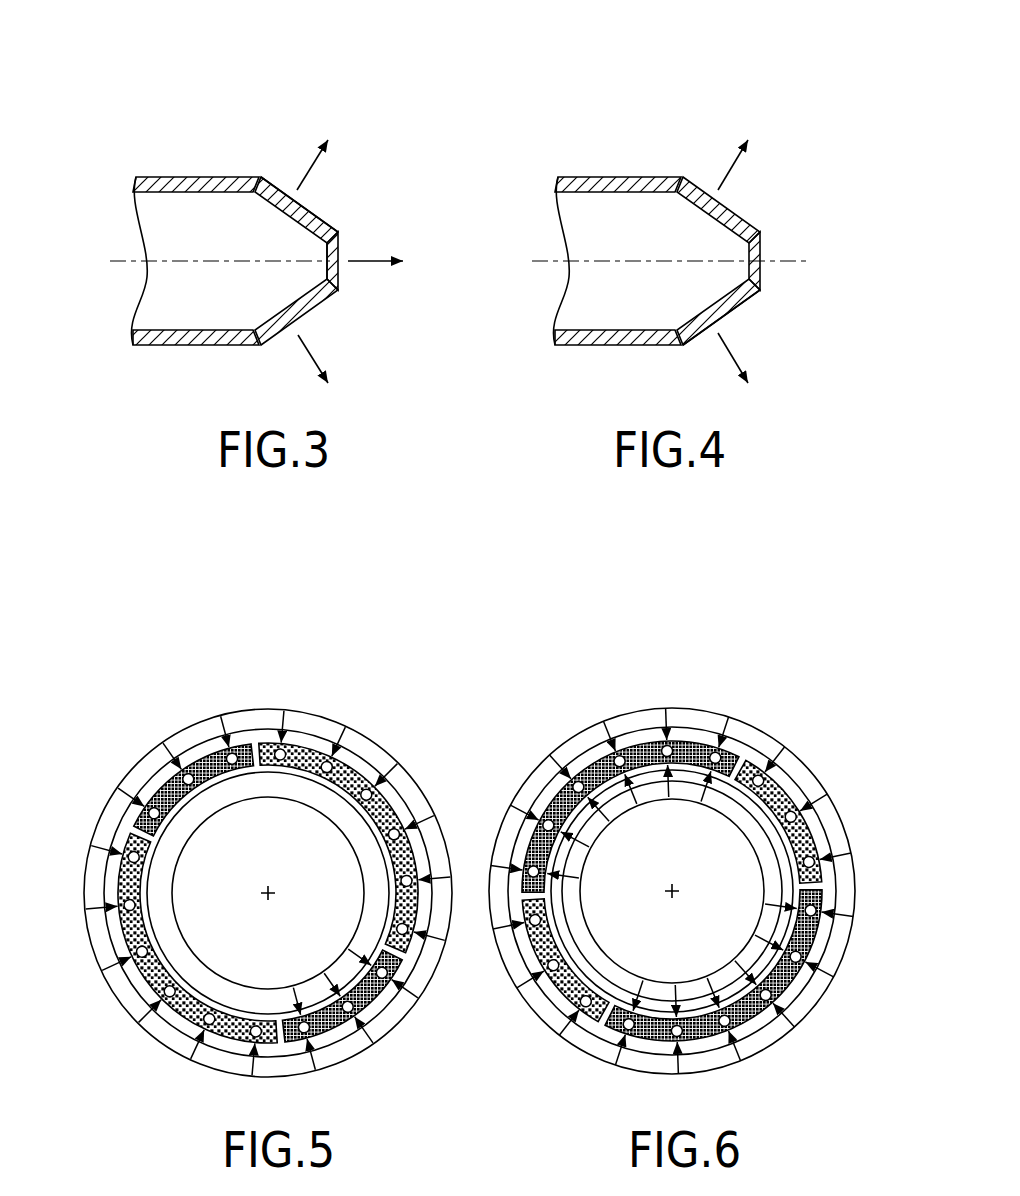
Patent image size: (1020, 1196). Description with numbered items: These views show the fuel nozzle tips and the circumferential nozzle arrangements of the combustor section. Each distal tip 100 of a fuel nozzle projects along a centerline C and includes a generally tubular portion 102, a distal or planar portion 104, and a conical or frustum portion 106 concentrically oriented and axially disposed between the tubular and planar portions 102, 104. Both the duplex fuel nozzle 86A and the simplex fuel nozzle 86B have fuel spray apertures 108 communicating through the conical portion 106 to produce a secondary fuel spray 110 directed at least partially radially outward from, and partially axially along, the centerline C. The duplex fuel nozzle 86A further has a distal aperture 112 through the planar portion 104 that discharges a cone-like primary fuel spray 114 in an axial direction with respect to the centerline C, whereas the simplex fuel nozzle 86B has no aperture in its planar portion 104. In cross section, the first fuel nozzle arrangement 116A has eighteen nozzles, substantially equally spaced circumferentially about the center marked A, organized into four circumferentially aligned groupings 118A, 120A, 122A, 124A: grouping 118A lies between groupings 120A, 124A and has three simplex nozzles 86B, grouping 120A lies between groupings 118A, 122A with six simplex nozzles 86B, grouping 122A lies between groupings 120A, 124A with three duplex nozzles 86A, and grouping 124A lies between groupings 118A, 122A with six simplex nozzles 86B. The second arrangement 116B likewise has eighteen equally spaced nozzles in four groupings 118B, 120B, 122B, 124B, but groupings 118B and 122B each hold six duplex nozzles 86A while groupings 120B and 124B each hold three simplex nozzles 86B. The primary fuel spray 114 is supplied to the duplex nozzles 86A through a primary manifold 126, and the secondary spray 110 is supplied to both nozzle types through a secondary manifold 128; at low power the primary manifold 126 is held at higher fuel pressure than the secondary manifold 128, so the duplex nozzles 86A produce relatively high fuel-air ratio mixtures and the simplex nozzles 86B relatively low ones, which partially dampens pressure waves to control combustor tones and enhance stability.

In FIG. 3, the duplex fuel nozzle 86A is at (272, 83).
In FIG. 5, the duplex fuel nozzle 86A is at (381, 1003).
In FIG. 6, the duplex fuel nozzle 86A is at (670, 758).
In FIG. 4, the simplex fuel nozzle 86B is at (713, 83).
In FIG. 5, the simplex fuel nozzle 86B is at (287, 752).
In FIG. 6, the simplex fuel nozzle 86B is at (803, 805).
In FIG. 3, the distal tip 100 is at (180, 163).
In FIG. 4, the distal tip 100 is at (600, 163).
In FIG. 3, the tubular portion 102 is at (235, 177).
In FIG. 4, the tubular portion 102 is at (587, 346).
In FIG. 3, the planar portion 104 is at (340, 232).
In FIG. 4, the planar portion 104 is at (762, 268).
In FIG. 3, the conical portion 106 is at (325, 210).
In FIG. 4, the conical portion 106 is at (750, 300).
In FIG. 3, the fuel spray apertures 108 is at (290, 205).
In FIG. 4, the fuel spray apertures 108 is at (707, 208).
In FIG. 3, the secondary fuel spray 110 is at (305, 176).
In FIG. 4, the secondary fuel spray 110 is at (722, 183).
In FIG. 3, the distal aperture 112 is at (333, 267).
In FIG. 3, the primary fuel spray 114 is at (373, 265).
In FIG. 3, the centerline C is at (130, 258).
In FIG. 4, the centerline C is at (777, 258).
In FIG. 5, the fuel nozzle arrangement 116A is at (378, 694).
In FIG. 6, the fuel nozzle arrangement 116B is at (738, 694).
In FIG. 5, the nozzle grouping 118A is at (182, 765).
In FIG. 6, the nozzle grouping 118B is at (598, 768).
In FIG. 5, the nozzle grouping 120A is at (391, 808).
In FIG. 6, the nozzle grouping 120B is at (767, 765).
In FIG. 5, the nozzle grouping 122A is at (370, 1010).
In FIG. 6, the nozzle grouping 122B is at (757, 1013).
In FIG. 5, the nozzle grouping 124A is at (182, 1015).
In FIG. 6, the nozzle grouping 124B is at (570, 998).
In FIG. 5, the primary manifold 126 is at (250, 987).
In FIG. 6, the primary manifold 126 is at (649, 984).
In FIG. 5, the secondary manifold 128 is at (122, 1005).
In FIG. 5, the central axis A is at (271, 892).
In FIG. 6, the central axis A is at (675, 890).